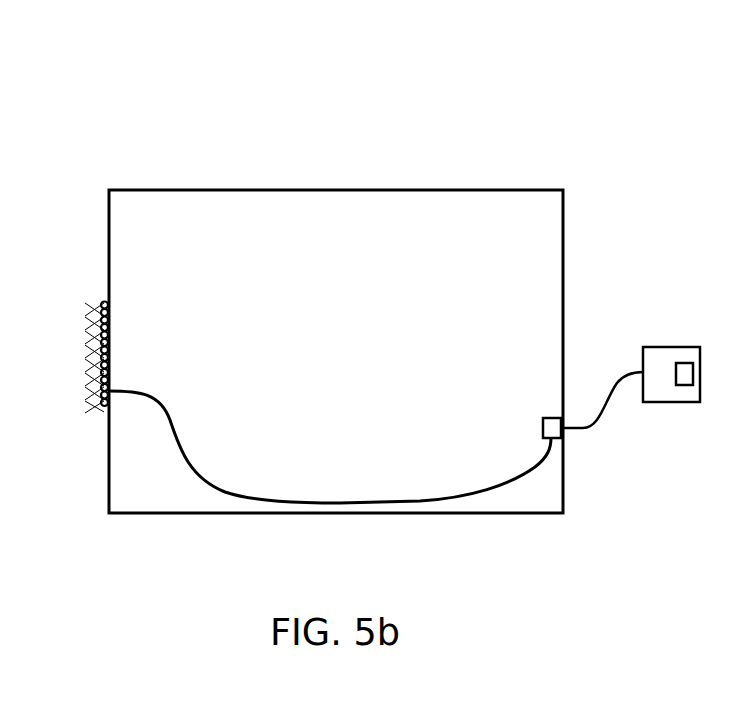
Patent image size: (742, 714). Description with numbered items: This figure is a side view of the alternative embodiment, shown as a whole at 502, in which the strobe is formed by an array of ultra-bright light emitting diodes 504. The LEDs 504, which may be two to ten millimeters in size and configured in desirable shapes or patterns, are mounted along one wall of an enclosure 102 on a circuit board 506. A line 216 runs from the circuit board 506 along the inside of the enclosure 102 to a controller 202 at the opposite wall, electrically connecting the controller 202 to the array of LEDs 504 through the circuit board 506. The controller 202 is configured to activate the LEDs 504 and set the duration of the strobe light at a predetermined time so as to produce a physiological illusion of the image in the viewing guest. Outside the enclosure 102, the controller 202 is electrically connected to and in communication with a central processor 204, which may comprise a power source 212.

The system 502 is at (563, 91).
The enclosure 102 is at (452, 190).
The array of ultra-bright light emitting diodes 504 is at (103, 302).
The circuit board 506 is at (113, 312).
The cable 216 is at (358, 501).
The controller 202 is at (543, 427).
The central processor 204 is at (677, 403).
The power source 212 is at (685, 363).